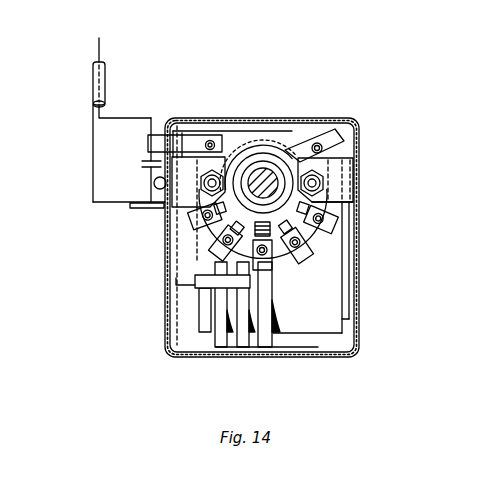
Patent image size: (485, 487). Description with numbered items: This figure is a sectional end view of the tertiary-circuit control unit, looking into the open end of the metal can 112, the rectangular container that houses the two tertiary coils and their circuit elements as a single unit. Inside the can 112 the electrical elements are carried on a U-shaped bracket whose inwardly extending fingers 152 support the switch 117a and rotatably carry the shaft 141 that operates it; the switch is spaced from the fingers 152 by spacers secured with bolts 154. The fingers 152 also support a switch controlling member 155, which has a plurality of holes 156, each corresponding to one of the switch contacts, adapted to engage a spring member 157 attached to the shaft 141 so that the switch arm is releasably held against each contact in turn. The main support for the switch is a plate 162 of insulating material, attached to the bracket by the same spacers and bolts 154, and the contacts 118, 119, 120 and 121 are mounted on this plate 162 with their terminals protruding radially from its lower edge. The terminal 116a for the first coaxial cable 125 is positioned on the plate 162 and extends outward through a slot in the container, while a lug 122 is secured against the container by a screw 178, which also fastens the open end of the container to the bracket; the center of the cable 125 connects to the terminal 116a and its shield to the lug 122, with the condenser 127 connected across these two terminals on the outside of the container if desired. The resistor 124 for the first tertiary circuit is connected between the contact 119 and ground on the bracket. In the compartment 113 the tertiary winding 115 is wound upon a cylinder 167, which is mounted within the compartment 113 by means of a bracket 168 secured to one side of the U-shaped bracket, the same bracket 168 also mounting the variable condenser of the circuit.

The metal can 112 is at (225, 103).
The compartment 113 is at (183, 128).
The tertiary winding 115 is at (268, 348).
The terminal 116a is at (158, 135).
The switch 117a is at (266, 181).
The contact 118 is at (180, 279).
The contact 119 is at (268, 264).
The contact 120 is at (318, 257).
The contact 121 is at (333, 222).
The lug 122 is at (155, 204).
The resistor 124 is at (99, 46).
The coaxial cable 125 is at (104, 70).
The condenser 127 is at (145, 165).
The shaft 141 is at (287, 133).
The fingers 152 is at (356, 166).
The bolts 154 is at (316, 176).
The switch controlling member 155 is at (315, 204).
The holes 156 is at (200, 175).
The spring member 157 is at (262, 222).
The plate 162 is at (231, 140).
The cylinder 167 is at (332, 325).
The bracket 168 is at (345, 283).
The screw 178 is at (155, 186).